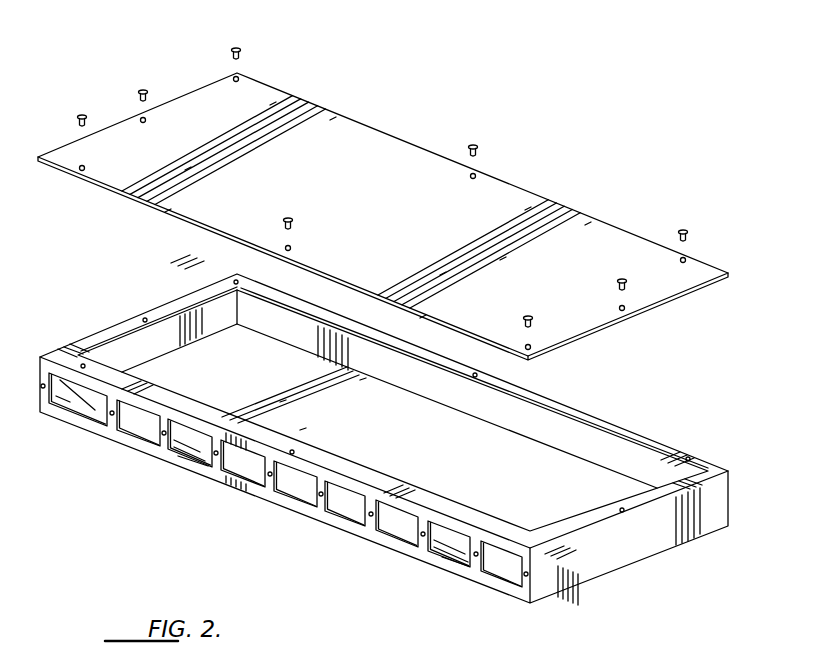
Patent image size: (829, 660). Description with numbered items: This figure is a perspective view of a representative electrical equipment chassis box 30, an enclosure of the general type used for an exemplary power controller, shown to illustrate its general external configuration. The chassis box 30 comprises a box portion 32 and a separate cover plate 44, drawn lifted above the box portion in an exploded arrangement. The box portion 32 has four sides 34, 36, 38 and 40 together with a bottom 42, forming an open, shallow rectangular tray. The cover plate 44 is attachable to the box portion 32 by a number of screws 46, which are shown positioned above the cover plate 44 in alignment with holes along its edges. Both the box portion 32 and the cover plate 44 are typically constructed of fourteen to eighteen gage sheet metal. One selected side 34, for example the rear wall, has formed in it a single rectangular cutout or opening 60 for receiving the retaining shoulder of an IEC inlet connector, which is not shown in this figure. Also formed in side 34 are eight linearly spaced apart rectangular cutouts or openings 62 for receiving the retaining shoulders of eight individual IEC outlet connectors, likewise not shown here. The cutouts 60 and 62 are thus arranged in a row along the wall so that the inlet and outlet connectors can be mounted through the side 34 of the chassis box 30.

The electrical equipment chassis box 30 is at (763, 244).
The box portion 32 is at (156, 305).
The side 34 is at (150, 408).
The side 36 is at (84, 346).
The side 38 is at (626, 550).
The side 40 is at (540, 438).
The bottom 42 is at (378, 435).
The cover plate 44 is at (399, 146).
The screws 46 is at (241, 49).
The rectangular cutout or opening 60 is at (80, 417).
The rectangular cutouts or openings 62 is at (143, 440).